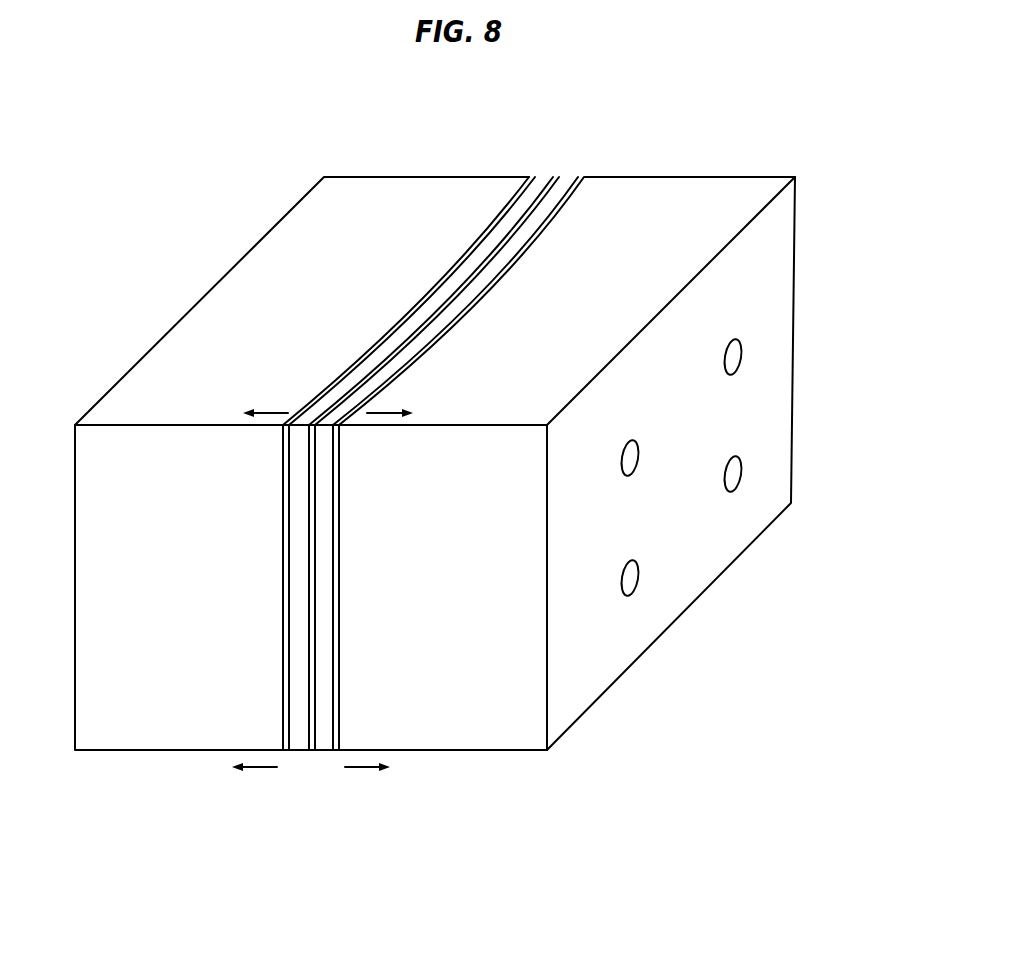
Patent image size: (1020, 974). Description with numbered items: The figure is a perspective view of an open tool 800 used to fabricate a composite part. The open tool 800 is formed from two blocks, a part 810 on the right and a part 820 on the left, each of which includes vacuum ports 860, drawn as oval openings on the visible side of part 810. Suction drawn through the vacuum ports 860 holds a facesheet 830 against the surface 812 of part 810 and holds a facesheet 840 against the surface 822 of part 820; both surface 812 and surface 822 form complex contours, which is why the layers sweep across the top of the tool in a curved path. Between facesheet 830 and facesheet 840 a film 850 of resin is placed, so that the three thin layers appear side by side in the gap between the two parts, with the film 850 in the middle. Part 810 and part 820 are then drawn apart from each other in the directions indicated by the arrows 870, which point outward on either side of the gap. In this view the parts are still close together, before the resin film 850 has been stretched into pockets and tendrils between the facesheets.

The open tool 800 is at (461, 472).
The part 810 is at (760, 320).
The surface 812 is at (339, 670).
The part 820 is at (108, 571).
The surface 822 is at (283, 668).
The facesheet 830 is at (573, 178).
The facesheet 840 is at (543, 178).
The film 850 is at (560, 178).
The vacuum ports 860 is at (640, 453).
The arrows 870 is at (262, 768).